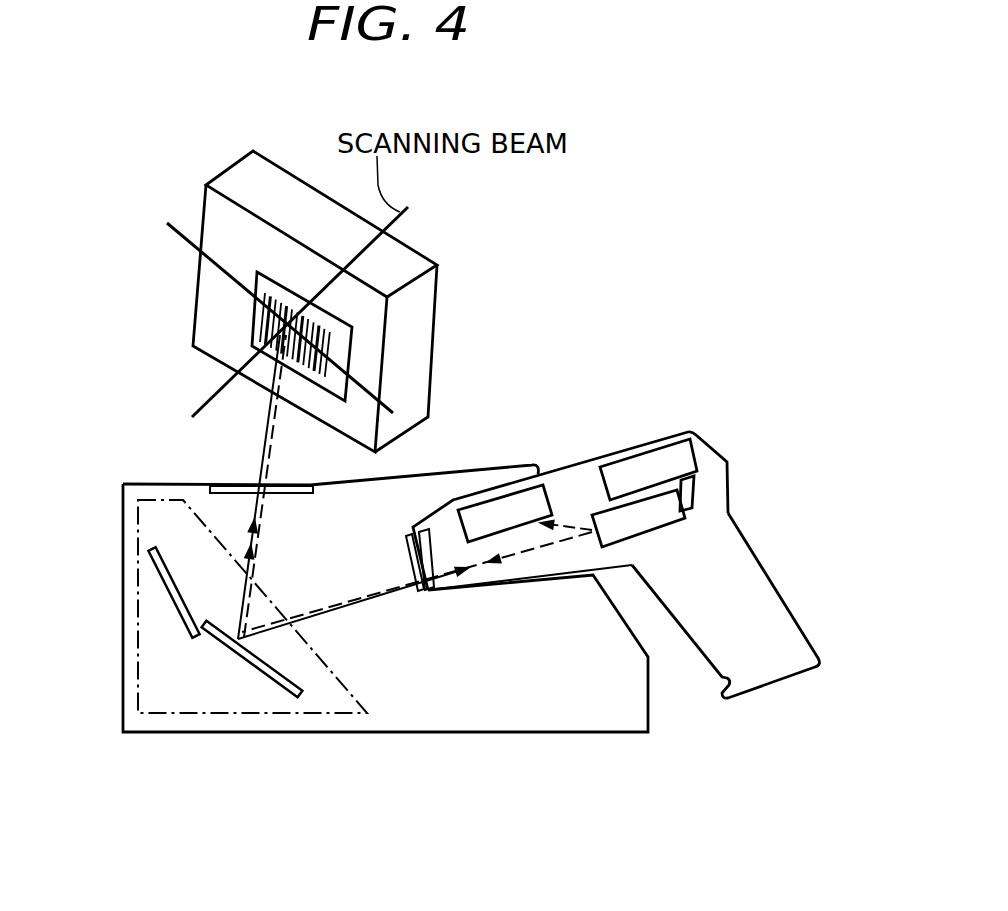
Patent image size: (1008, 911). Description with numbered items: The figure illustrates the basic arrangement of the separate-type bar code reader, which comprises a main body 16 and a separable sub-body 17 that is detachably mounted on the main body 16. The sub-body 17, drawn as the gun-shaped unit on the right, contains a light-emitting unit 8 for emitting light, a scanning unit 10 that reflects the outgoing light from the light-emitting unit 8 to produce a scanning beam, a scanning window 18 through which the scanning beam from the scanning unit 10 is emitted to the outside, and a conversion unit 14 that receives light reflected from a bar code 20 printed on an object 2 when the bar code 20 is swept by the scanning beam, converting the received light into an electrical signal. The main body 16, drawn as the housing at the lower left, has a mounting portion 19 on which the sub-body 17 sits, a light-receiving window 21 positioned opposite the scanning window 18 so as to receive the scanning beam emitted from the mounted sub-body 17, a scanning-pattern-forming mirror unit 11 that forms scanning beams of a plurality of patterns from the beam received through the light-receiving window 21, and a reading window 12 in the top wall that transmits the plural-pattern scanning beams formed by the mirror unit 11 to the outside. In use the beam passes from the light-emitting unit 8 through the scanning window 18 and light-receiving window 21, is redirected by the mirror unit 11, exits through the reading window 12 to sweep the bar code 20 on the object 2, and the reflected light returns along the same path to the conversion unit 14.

The object 2 is at (413, 253).
The bar code 20 is at (333, 343).
The scanning unit 10 is at (660, 540).
The scanning-pattern-forming mirror unit 11 is at (142, 611).
The reading window 12 is at (227, 487).
The conversion unit 14 is at (546, 486).
The light-emitting unit 8 is at (658, 443).
The main body 16 is at (463, 470).
The sub-body 17 is at (745, 545).
The scanning window 18 is at (426, 596).
The mounting portion 19 is at (470, 588).
The light-receiving window 21 is at (410, 543).